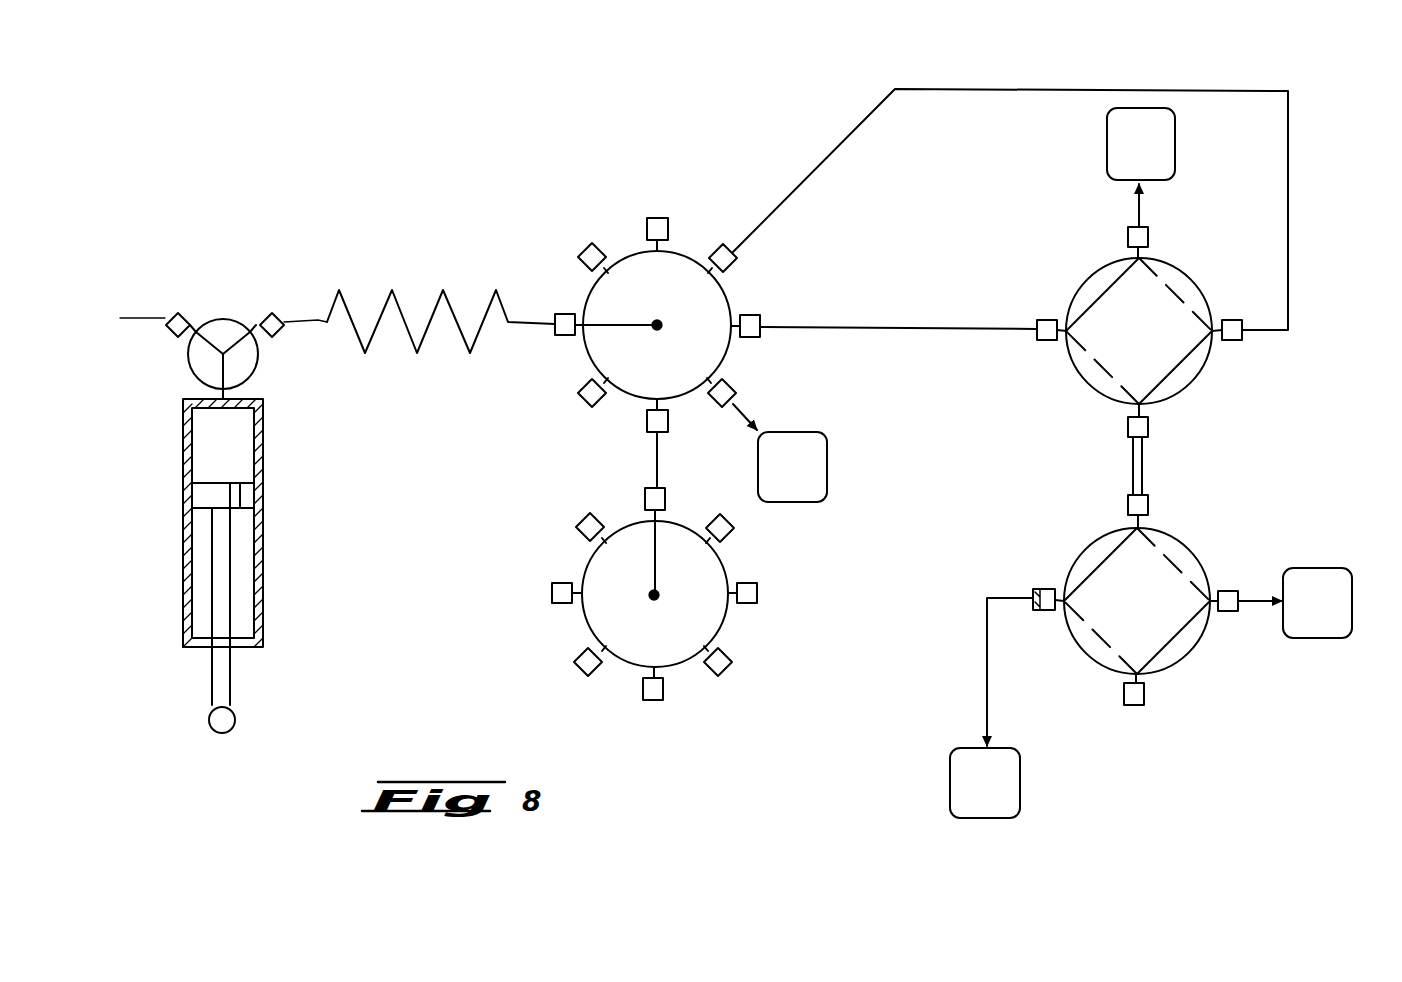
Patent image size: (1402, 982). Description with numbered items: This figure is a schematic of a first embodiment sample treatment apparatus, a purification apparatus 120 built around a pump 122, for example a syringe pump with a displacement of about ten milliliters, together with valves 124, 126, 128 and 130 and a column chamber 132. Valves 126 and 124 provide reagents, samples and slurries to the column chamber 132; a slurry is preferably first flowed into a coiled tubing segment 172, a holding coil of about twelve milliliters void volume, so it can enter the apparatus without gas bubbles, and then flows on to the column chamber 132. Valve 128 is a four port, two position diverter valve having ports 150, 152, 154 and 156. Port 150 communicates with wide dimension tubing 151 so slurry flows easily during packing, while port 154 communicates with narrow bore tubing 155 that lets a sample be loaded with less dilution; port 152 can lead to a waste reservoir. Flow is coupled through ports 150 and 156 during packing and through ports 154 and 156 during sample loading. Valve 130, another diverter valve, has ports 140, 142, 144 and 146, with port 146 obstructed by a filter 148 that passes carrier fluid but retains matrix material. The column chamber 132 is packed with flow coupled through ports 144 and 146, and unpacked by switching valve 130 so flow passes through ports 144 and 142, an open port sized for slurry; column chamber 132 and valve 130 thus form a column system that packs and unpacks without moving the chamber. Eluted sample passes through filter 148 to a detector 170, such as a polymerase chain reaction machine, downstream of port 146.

The purification apparatus 120 is at (233, 115).
The pump 122 is at (285, 547).
The tubing segment 172 is at (457, 332).
The valve 126 is at (642, 282).
The valve 124 is at (618, 612).
The wide dimension tubing 151 is at (897, 328).
The port 150 is at (1047, 320).
The valve 128 is at (1092, 282).
The port 152 is at (1150, 237).
The port 154 is at (1230, 343).
The tubing 155 is at (1288, 197).
The port 156 is at (1128, 426).
The column chamber 132 is at (1142, 467).
The port 144 is at (1128, 508).
The valve 130 is at (1187, 550).
The port 146 is at (1049, 589).
The filter 148 is at (1033, 607).
The port 142 is at (1228, 612).
The port 140 is at (1145, 695).
The detector 170 is at (950, 781).